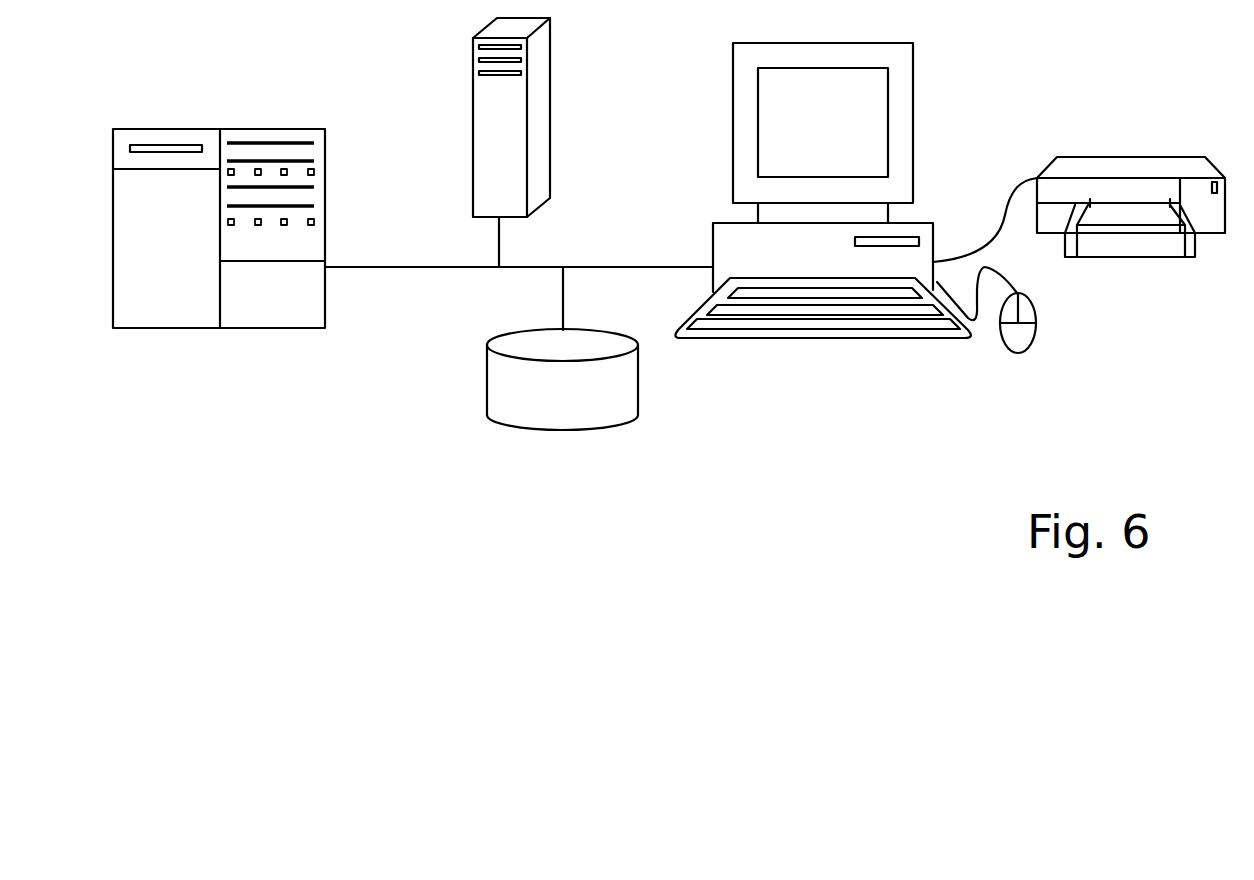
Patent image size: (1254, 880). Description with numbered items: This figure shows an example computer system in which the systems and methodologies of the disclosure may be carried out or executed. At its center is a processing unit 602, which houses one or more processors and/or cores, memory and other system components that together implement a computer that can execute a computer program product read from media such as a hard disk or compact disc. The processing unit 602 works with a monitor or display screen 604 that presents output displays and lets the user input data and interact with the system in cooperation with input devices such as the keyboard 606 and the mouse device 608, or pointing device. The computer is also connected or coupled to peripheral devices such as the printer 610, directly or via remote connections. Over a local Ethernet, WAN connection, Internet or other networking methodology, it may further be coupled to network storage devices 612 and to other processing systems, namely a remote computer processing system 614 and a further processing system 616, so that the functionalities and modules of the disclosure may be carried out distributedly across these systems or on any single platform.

The processing unit 602 is at (713, 247).
The monitor or display screen 604 is at (913, 141).
The keyboard 606 is at (880, 338).
The mouse device 608 is at (1035, 338).
The printer 610 is at (1132, 155).
The network storage devices 612 is at (585, 427).
The remote computer processing system 614 is at (550, 107).
The processing system 616 is at (266, 129).